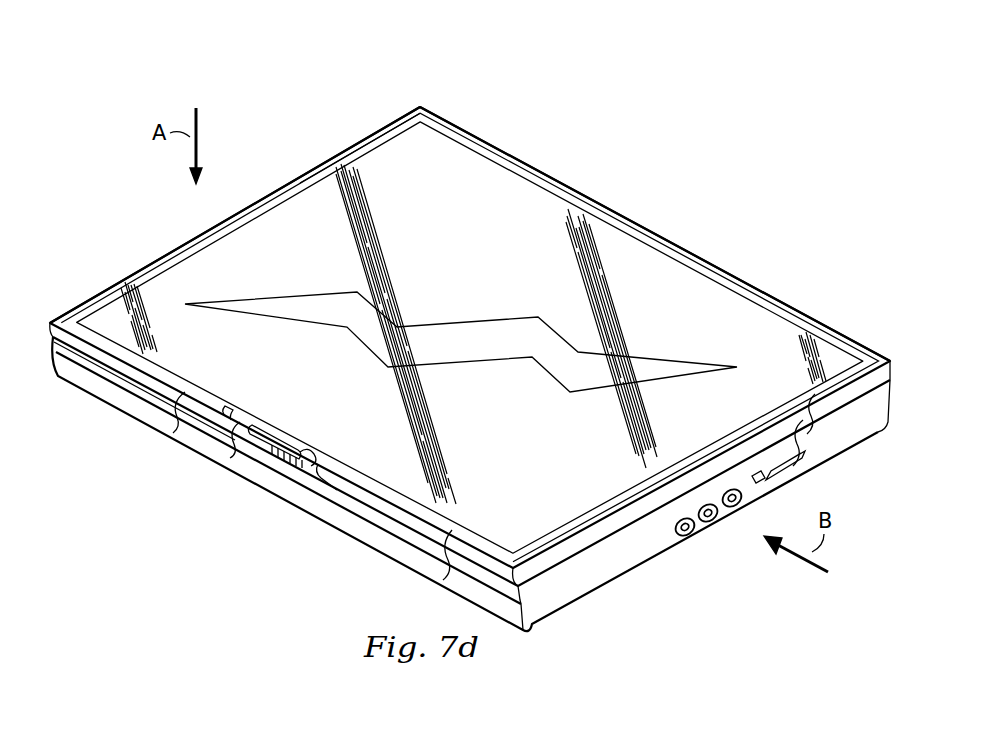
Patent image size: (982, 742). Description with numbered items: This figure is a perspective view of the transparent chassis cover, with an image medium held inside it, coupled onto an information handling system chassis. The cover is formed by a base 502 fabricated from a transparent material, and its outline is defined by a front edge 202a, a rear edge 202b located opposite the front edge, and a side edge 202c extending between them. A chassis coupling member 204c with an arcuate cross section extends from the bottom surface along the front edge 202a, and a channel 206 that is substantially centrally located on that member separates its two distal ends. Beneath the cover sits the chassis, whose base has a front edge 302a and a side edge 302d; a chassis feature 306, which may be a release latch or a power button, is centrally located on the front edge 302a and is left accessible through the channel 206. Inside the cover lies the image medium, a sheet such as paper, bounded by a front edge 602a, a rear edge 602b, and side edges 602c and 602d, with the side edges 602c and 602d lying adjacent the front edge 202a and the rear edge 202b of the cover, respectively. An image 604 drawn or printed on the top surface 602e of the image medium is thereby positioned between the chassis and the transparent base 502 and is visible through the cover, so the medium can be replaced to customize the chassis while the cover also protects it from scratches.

The base 502 is at (417, 100).
The front edge 202a is at (322, 455).
The rear edge 202b is at (648, 225).
The side edge 202c is at (173, 248).
The chassis coupling member 204c is at (172, 435).
The channel 206 is at (312, 476).
The front edge 302a is at (235, 455).
The side edge 302d is at (568, 560).
The chassis feature 306 is at (275, 490).
The front edge 602a is at (292, 184).
The rear edge 602b is at (815, 420).
The side edge 602c is at (775, 302).
The side edge 602d is at (410, 560).
The top surface 602e is at (372, 165).
The image 604 is at (455, 322).